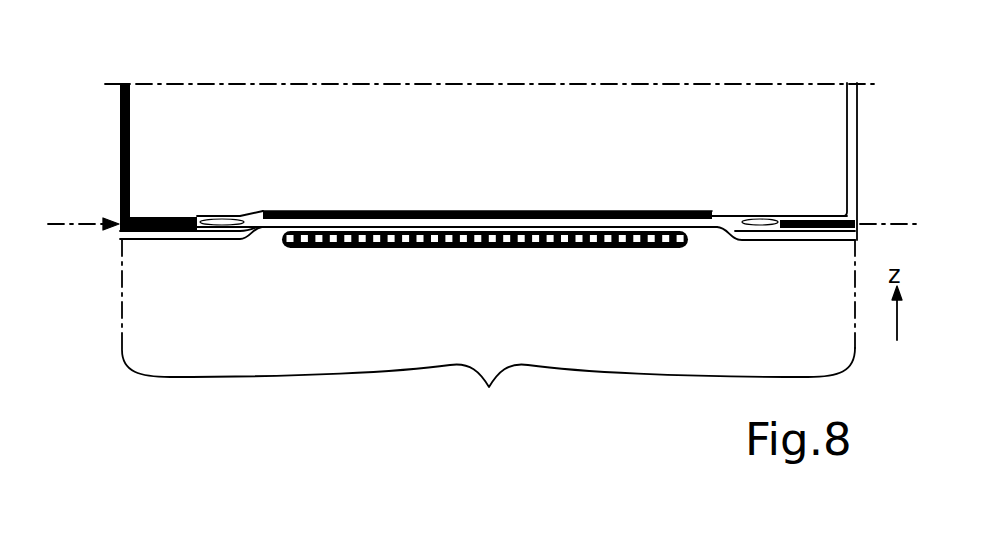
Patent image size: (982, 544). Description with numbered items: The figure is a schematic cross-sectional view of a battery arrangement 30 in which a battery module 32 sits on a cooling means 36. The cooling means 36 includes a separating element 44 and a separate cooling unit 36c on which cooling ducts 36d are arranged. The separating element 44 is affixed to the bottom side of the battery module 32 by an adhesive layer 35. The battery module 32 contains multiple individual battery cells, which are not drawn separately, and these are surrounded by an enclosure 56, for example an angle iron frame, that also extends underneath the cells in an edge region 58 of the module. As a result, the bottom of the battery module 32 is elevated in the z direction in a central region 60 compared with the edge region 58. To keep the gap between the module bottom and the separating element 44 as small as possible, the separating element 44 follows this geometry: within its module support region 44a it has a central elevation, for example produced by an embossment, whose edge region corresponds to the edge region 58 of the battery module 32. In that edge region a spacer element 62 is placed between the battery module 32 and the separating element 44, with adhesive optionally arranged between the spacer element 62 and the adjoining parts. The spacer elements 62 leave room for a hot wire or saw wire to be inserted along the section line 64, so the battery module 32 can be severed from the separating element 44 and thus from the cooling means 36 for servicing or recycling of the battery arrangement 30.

The battery arrangement 30 is at (112, 66).
The battery module 32 is at (252, 140).
The adhesive layer 35 is at (615, 210).
The cooling means 36 is at (366, 294).
The cooling unit 36c is at (412, 248).
The cooling ducts 36d is at (573, 248).
The separating element 44 is at (240, 243).
The module support region 44a is at (488, 331).
The enclosure 56 is at (120, 97).
The edge region 58 is at (158, 216).
The central region 60 is at (382, 210).
The spacer element 62 is at (175, 240).
The section line 64 is at (80, 223).